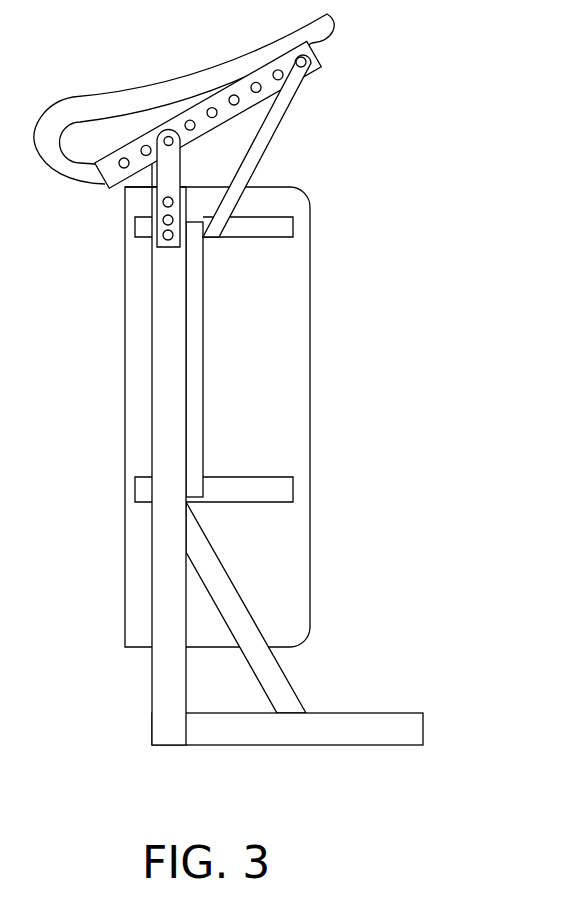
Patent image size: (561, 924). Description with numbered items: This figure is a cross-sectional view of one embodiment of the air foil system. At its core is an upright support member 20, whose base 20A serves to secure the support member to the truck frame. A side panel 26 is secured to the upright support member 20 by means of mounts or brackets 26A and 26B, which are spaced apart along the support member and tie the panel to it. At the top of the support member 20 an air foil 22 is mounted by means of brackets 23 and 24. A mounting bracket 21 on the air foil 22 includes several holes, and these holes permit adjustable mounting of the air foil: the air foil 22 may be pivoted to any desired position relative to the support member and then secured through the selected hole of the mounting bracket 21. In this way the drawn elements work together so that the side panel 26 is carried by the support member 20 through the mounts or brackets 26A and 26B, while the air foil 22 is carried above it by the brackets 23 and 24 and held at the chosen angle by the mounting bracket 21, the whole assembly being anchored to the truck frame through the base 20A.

The upright support member 20 is at (252, 471).
The base 20A is at (280, 732).
The mounting bracket 21 is at (252, 96).
The air foil 22 is at (117, 95).
The bracket 23 is at (158, 176).
The bracket 24 is at (256, 154).
The side panel 26 is at (300, 364).
The mount or bracket 26A is at (288, 223).
The mount or bracket 26B is at (286, 490).